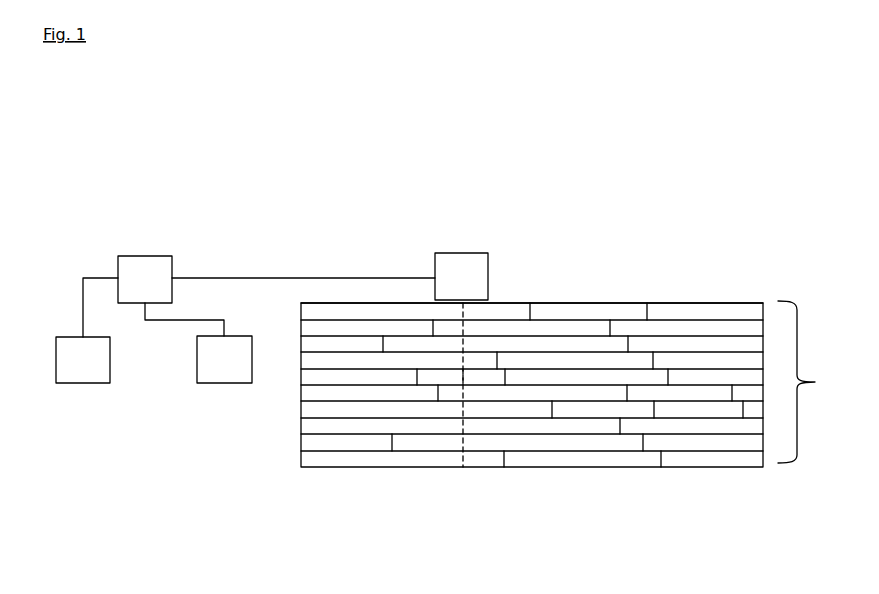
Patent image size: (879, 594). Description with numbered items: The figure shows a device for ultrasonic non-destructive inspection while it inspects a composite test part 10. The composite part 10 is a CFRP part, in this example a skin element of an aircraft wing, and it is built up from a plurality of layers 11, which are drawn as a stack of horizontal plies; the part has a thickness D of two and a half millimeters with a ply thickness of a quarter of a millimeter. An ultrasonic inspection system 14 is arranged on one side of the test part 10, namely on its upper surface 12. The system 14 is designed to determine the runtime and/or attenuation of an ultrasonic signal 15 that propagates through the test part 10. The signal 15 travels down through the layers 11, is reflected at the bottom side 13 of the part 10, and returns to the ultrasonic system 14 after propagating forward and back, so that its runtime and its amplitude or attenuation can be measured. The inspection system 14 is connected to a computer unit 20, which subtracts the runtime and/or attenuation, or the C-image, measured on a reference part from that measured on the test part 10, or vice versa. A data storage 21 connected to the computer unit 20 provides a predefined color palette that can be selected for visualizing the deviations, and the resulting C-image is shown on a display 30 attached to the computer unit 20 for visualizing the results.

The composite part 10 is at (708, 157).
The layers 11 is at (679, 330).
The upper surface 12 is at (717, 300).
The bottom side 13 is at (475, 467).
The ultrasonic inspection system 14 is at (470, 252).
The ultrasonic signal 15 is at (463, 381).
The computer unit 20 is at (155, 255).
The data storage 21 is at (197, 360).
The display 30 is at (55, 363).
The thickness D is at (808, 382).